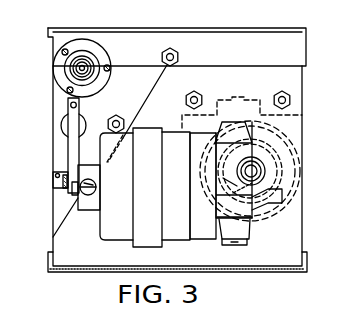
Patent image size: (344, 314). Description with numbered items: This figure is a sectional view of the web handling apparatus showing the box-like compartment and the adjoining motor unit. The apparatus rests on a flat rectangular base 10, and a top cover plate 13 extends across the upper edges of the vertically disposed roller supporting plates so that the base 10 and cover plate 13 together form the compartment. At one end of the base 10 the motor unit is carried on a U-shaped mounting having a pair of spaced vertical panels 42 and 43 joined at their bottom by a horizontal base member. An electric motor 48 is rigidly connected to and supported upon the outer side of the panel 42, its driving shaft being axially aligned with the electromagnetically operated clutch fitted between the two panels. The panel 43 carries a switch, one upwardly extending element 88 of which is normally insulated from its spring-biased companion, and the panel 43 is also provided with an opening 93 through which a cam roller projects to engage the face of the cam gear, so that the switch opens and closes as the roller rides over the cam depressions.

The base 10 is at (63, 273).
The top cover plate 13 is at (143, 28).
The vertical panel 42 is at (297, 82).
The vertical panel 43 is at (224, 48).
The electric motor 48 is at (147, 187).
The switch element 88 is at (73, 147).
The opening 93 is at (62, 126).